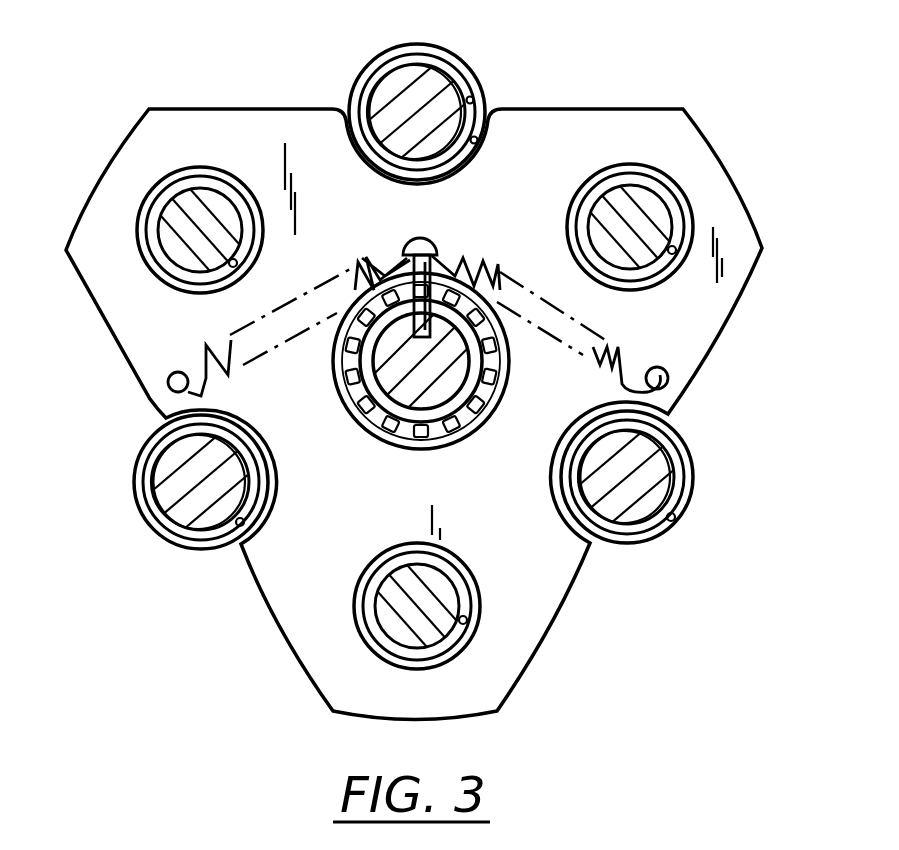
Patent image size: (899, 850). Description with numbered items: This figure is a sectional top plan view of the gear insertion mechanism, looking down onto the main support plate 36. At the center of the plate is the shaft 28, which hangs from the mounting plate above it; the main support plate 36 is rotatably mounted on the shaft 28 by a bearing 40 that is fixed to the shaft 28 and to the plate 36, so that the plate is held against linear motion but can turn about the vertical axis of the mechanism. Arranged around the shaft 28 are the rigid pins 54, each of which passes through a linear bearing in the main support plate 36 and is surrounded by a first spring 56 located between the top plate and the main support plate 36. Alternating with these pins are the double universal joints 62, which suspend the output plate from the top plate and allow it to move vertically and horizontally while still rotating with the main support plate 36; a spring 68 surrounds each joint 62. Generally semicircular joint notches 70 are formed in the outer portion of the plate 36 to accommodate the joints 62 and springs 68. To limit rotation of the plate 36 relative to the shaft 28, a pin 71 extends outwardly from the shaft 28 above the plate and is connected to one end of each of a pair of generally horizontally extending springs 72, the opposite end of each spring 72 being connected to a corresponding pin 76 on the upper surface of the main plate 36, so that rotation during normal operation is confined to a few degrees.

The shaft 28 is at (409, 383).
The main support plate 36 is at (765, 249).
The bearing 40 is at (465, 413).
The rigid pin 54 is at (173, 220).
The first spring 56 is at (160, 190).
The double universal joint 62 is at (437, 80).
The spring 68 is at (467, 78).
The joint notch 70 is at (477, 138).
The pin 71 is at (428, 243).
The spring 72 is at (205, 352).
The pin 76 is at (168, 378).